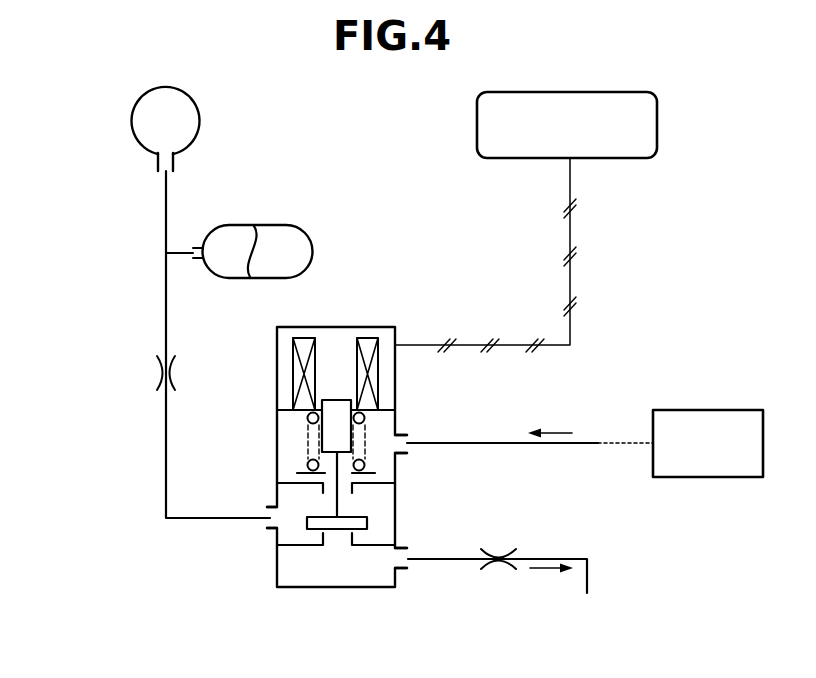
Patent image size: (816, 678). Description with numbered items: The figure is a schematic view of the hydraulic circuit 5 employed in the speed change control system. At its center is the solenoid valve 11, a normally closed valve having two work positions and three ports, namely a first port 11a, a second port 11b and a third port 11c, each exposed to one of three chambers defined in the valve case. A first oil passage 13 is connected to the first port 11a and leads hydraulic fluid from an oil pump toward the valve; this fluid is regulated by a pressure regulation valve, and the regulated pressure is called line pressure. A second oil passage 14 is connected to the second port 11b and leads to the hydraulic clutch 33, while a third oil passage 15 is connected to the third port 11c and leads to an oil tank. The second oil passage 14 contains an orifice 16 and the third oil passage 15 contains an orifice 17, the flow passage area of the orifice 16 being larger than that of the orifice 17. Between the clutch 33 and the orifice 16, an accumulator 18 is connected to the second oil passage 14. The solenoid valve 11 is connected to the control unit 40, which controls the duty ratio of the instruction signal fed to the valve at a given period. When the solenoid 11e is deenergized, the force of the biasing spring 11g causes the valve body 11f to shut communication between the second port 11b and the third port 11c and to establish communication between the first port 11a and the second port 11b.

The hydraulic circuit 5 is at (82, 168).
The hydraulic clutch 33 is at (197, 105).
The accumulator 18 is at (272, 224).
The control unit 40 is at (615, 158).
The orifice 16 is at (157, 364).
The second oil passage 14 is at (166, 455).
The solenoid valve 11 is at (312, 493).
The first port 11a is at (407, 455).
The second port 11b is at (267, 526).
The third port 11c is at (407, 566).
The solenoid 11e is at (378, 390).
The valve body 11f is at (337, 530).
The biasing spring 11g is at (307, 432).
The first oil passage 13 is at (505, 443).
The third oil passage 15 is at (557, 559).
The orifice 17 is at (490, 549).